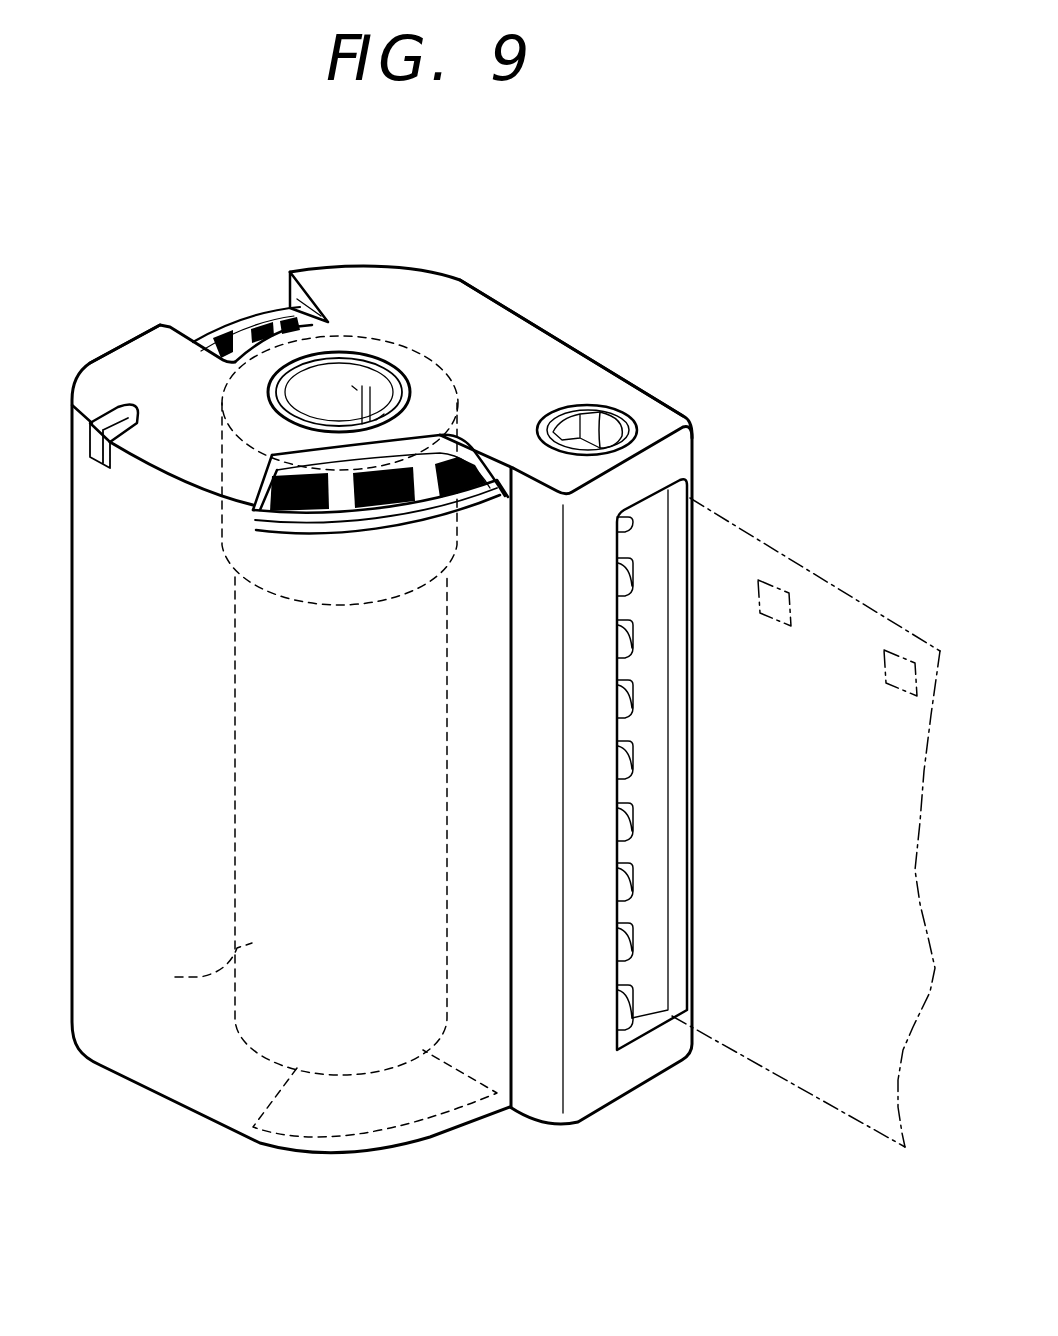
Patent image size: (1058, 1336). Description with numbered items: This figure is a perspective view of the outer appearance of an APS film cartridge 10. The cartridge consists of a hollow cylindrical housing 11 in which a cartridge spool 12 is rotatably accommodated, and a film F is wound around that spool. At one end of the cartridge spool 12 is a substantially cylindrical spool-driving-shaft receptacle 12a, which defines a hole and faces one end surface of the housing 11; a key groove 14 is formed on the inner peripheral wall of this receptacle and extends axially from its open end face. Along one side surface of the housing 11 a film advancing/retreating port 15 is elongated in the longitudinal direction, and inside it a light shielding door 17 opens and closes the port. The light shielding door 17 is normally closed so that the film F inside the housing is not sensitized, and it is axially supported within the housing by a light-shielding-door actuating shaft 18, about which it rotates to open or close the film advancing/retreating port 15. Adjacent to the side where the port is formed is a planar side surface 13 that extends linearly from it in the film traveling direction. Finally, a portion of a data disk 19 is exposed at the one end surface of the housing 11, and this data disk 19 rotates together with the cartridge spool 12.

The film cartridge 10 is at (322, 258).
The housing 11 is at (497, 337).
The cartridge spool 12 is at (317, 736).
The spool-driving-shaft receptacle 12a is at (320, 400).
The planar side surface 13 is at (569, 340).
The key groove 14 is at (380, 398).
The film advancing/retreating port 15 is at (638, 707).
The light shielding door 17 is at (623, 583).
The light-shielding-door actuating shaft 18 is at (600, 424).
The data disk 19 is at (340, 500).
The film F is at (782, 1062).